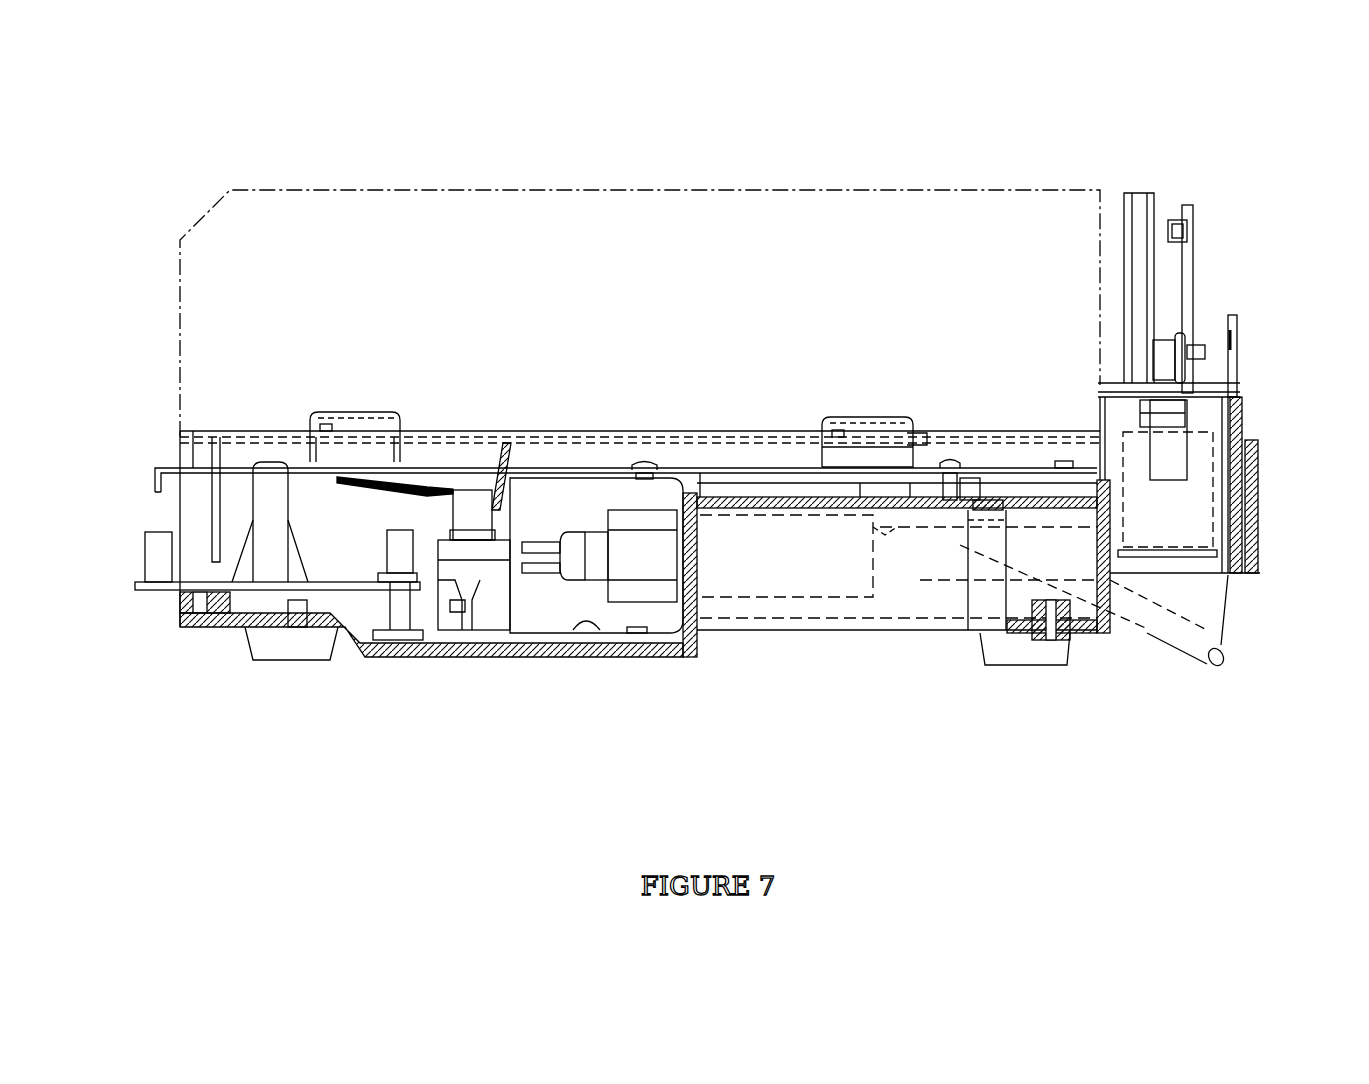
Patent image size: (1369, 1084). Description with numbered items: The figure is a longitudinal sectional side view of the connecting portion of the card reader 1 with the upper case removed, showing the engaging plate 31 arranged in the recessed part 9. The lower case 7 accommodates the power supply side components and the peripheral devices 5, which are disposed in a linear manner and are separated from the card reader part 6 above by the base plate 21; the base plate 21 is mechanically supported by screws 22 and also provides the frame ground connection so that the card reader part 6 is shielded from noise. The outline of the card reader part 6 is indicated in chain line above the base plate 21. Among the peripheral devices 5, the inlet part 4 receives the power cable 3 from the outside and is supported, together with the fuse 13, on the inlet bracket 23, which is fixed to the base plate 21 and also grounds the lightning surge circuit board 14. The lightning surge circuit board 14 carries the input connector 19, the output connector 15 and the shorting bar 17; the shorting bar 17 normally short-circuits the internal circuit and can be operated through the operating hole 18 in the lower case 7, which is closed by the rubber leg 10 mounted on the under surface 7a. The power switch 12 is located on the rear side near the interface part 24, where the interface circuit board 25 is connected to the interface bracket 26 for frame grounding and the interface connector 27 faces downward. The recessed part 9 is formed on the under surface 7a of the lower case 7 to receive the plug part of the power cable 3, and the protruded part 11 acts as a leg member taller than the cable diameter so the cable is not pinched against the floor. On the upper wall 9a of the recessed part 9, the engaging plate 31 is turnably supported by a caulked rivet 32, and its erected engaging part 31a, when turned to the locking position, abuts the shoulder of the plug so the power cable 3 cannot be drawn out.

The card reader 1 is at (165, 183).
The power cable 3 is at (928, 540).
The inlet part 4 is at (657, 593).
The peripheral devices 5 is at (462, 680).
The card reader part 6 is at (483, 212).
The lower case 7 is at (1095, 640).
The under surface 7a is at (943, 636).
The recessed part 9 is at (775, 603).
The upper wall 9a is at (790, 519).
The rubber leg 10 is at (317, 660).
The protruded part 11 is at (1000, 655).
The power switch 12 is at (1195, 527).
The fuse 13 is at (500, 607).
The lightning surge circuit board 14 is at (252, 530).
The output connector 15 is at (153, 556).
The shorting bar 17 is at (290, 597).
The operating hole 18 is at (333, 628).
The input connector 19 is at (403, 543).
The base plate 21 is at (568, 468).
The screws 22 is at (657, 462).
The inlet bracket 23 is at (605, 640).
The interface part 24 is at (1231, 216).
The interface circuit board 25 is at (1193, 270).
The interface bracket 26 is at (1208, 393).
The interface connector 27 is at (1173, 412).
The engaging plate 31 is at (922, 515).
The engaging part 31a is at (882, 530).
The rivet 32 is at (1000, 500).